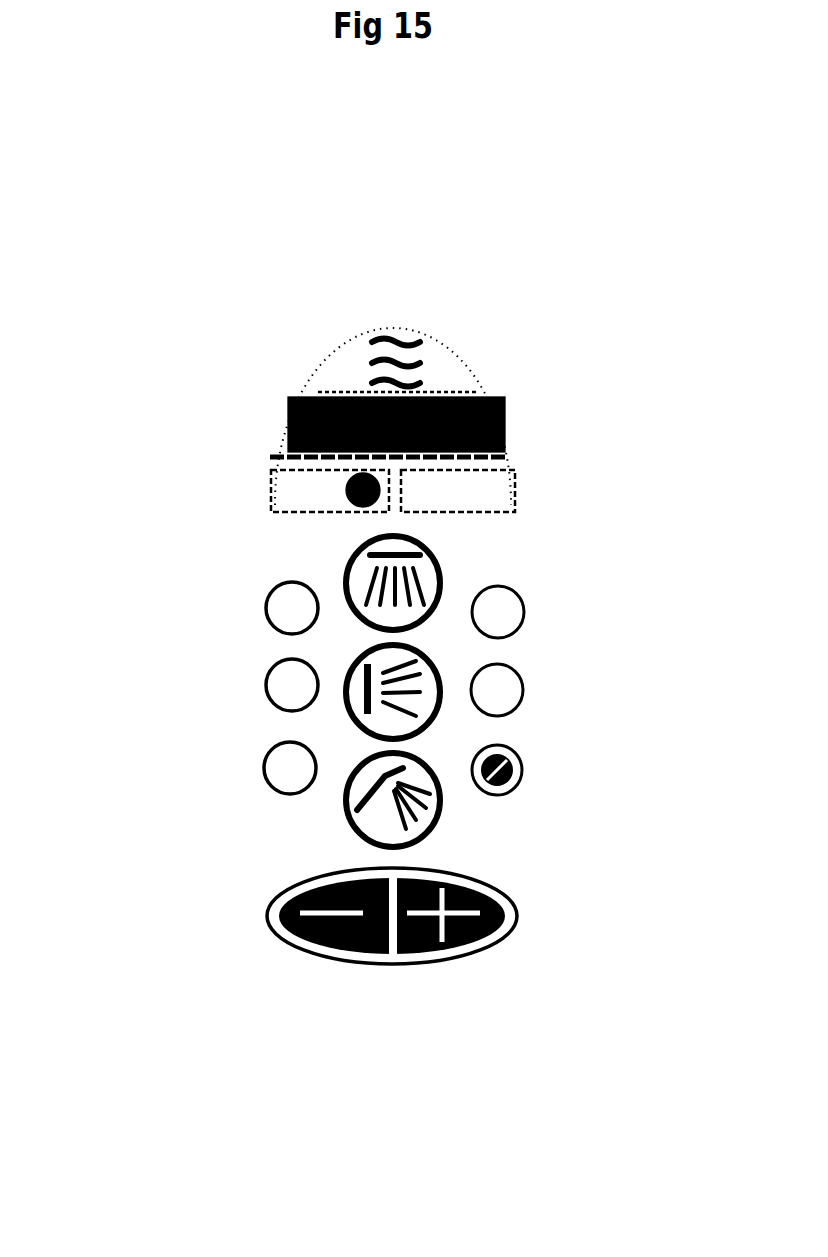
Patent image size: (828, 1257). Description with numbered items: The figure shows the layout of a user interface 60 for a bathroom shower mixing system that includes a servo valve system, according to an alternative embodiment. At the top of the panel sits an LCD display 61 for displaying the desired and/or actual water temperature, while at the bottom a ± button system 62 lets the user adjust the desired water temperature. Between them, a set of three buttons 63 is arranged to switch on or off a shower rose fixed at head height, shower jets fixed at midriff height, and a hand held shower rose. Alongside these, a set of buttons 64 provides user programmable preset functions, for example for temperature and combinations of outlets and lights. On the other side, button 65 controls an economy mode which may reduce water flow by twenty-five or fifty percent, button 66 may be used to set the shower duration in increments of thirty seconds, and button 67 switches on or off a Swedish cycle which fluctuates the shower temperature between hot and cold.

The user interface 60 is at (402, 288).
The LCD display 61 is at (492, 395).
The ± button system 62 is at (395, 972).
The set of three buttons 63 is at (440, 778).
The set of buttons 64 is at (264, 620).
The button 65 is at (527, 620).
The button 66 is at (527, 693).
The button 67 is at (525, 768).